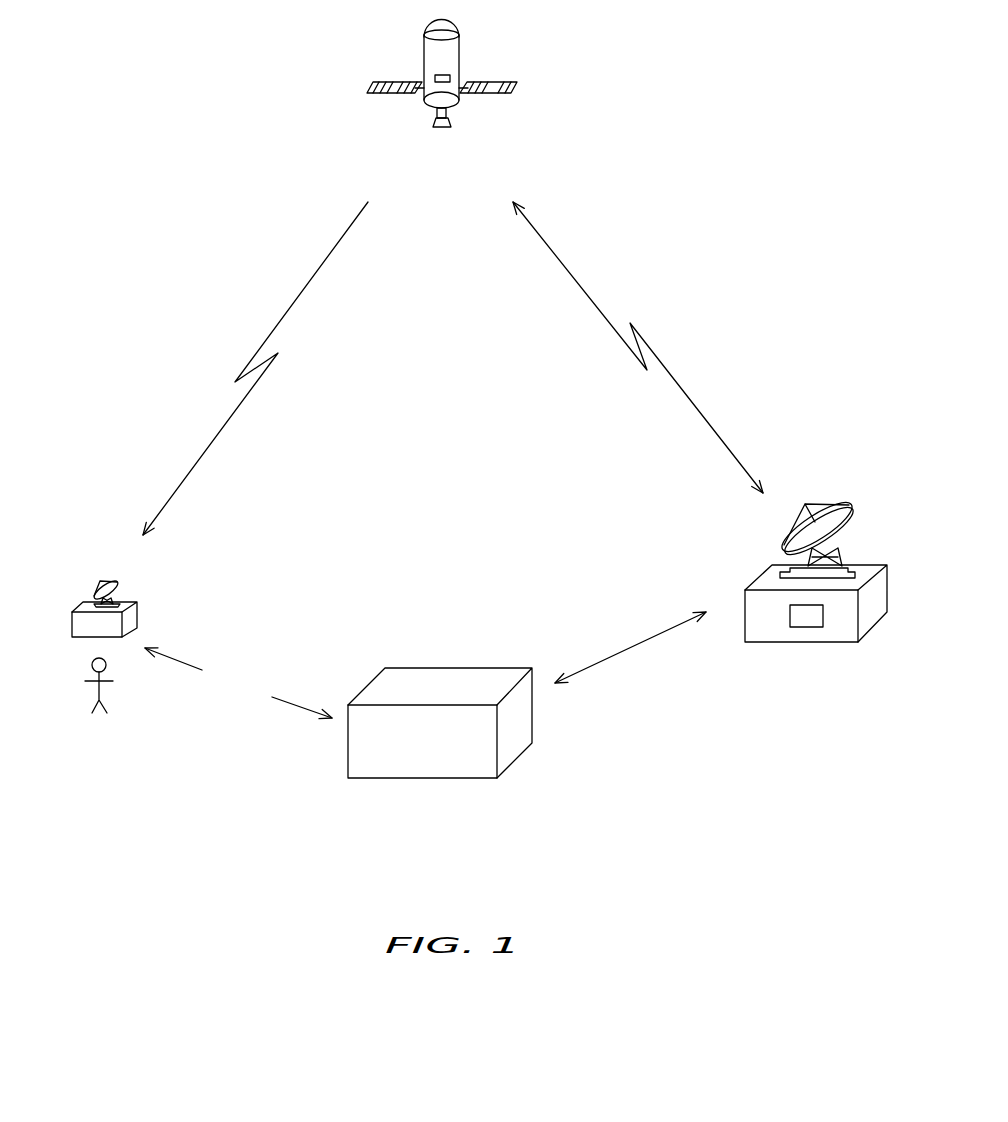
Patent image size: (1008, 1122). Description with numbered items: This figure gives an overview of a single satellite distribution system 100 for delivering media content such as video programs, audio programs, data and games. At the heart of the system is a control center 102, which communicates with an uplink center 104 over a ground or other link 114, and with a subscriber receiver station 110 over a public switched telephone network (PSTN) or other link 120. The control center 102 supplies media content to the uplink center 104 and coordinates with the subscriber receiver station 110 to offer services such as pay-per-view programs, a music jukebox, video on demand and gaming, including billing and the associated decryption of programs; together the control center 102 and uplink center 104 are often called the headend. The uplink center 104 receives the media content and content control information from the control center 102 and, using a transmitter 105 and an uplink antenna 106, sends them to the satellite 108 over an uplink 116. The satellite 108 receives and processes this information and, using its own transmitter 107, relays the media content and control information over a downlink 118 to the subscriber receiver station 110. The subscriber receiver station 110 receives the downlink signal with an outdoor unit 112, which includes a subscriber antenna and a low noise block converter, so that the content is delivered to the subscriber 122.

The single satellite distribution system 100 is at (715, 185).
The control center 102 is at (508, 760).
The uplink center 104 is at (798, 642).
The transmitter 105 is at (823, 627).
The uplink antenna 106 is at (855, 512).
The transmitter 107 is at (446, 75).
The satellite 108 is at (488, 93).
The subscriber receiver station 110 is at (143, 610).
The outdoor unit (ODU) 112 is at (103, 578).
The ground or other link 114 is at (627, 645).
The uplink 116 is at (681, 388).
The downlink 118 is at (303, 288).
The public switched telephone network (PSTN) or other link 120 is at (270, 656).
The subscriber 122 is at (118, 700).